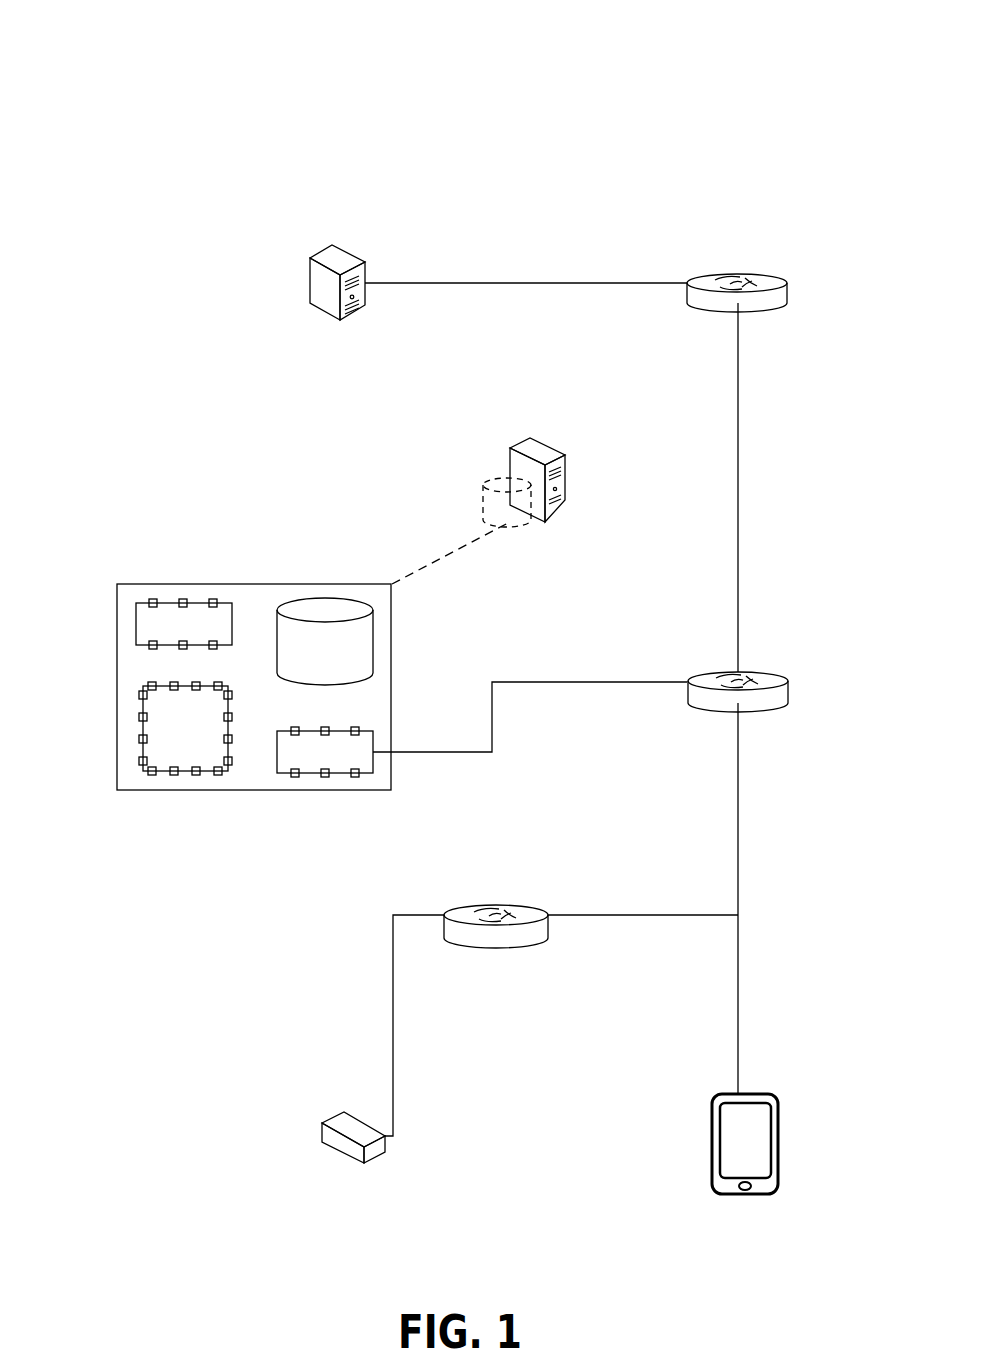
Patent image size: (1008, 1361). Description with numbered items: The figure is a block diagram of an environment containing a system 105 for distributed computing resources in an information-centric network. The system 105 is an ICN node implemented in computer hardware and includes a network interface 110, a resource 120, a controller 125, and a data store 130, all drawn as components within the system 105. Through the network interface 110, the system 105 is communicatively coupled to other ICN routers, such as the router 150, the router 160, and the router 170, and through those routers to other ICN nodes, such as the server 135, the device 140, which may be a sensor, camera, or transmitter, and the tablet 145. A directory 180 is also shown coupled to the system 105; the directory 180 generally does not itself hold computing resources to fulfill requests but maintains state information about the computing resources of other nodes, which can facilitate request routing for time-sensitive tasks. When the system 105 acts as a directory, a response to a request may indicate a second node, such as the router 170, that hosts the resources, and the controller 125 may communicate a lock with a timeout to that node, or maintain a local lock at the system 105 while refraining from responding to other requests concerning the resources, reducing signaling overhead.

The system 105 is at (137, 584).
The network interface 110 is at (322, 777).
The resource 120 is at (136, 624).
The controller 125 is at (143, 729).
The data store 130 is at (322, 598).
The server 135 is at (315, 262).
The device 140 is at (323, 1124).
The tablet 145 is at (712, 1142).
The router 150 is at (725, 672).
The router 160 is at (735, 275).
The router 170 is at (495, 905).
The directory 180 is at (510, 448).